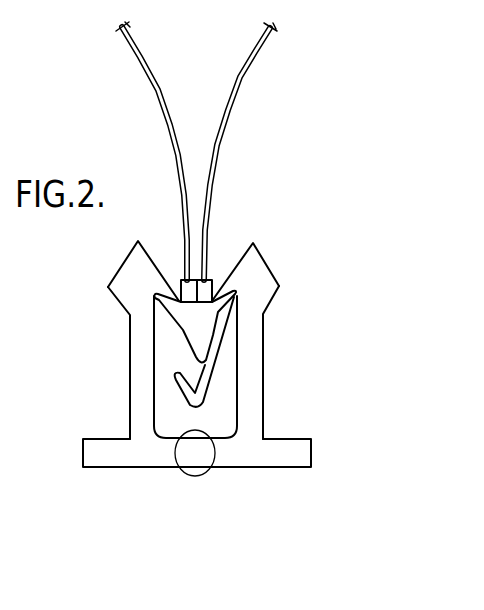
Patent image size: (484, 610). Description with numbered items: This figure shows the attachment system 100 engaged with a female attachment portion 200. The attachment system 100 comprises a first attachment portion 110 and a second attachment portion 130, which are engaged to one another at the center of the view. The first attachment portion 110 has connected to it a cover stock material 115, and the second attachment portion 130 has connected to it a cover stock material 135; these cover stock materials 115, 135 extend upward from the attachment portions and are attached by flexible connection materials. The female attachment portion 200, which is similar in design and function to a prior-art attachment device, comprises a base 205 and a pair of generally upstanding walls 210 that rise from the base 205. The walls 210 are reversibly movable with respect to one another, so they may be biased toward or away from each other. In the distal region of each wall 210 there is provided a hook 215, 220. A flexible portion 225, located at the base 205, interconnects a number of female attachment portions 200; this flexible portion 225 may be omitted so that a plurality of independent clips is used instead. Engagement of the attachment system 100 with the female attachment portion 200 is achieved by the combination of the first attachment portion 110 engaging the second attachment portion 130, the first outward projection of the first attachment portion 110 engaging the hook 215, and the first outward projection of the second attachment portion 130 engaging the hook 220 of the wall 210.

The attachment system 100 is at (258, 150).
The first attachment portion 110 is at (178, 318).
The cover stock material 115 is at (135, 57).
The second attachment portion 130 is at (178, 318).
The cover stock material 135 is at (250, 67).
The female attachment portion 200 is at (306, 377).
The base 205 is at (103, 455).
The upstanding walls 210 is at (133, 392).
The hook 215 is at (163, 283).
The hook 220 is at (227, 280).
The flexible portion 225 is at (197, 470).